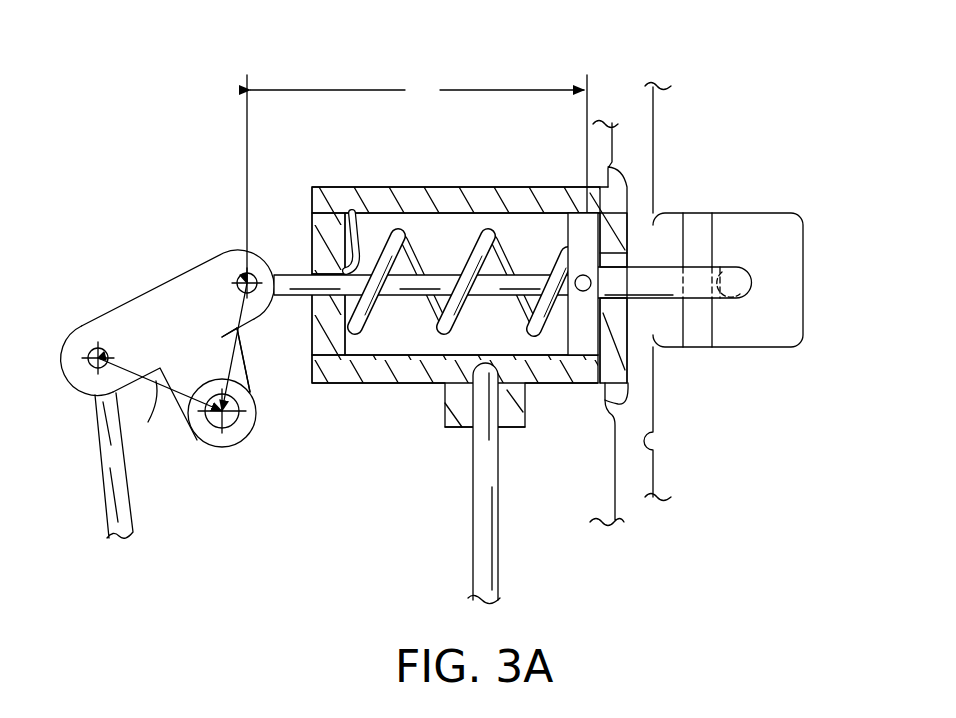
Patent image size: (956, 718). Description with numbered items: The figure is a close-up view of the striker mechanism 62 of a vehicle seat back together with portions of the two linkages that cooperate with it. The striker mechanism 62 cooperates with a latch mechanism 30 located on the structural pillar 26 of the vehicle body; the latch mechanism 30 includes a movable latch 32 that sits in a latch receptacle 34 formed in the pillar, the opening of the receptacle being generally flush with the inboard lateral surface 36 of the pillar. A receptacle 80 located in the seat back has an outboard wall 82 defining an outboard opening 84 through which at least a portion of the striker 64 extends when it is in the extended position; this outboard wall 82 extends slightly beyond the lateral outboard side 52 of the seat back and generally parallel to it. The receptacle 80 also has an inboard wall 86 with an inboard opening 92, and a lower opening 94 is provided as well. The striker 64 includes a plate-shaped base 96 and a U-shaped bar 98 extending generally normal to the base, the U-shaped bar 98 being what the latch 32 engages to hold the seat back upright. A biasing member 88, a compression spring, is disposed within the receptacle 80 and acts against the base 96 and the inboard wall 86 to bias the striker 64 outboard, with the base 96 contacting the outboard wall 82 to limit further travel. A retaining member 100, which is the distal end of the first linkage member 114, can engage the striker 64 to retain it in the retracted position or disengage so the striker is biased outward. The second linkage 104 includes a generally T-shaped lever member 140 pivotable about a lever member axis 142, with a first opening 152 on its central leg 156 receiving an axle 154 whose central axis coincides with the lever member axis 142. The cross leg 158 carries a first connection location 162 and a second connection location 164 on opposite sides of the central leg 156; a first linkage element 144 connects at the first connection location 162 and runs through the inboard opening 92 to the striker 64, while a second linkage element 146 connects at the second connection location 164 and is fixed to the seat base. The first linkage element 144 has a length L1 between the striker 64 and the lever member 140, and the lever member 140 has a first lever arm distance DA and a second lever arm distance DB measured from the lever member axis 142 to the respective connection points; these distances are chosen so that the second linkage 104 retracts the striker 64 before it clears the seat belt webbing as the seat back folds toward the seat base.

The structural pillar 26 is at (663, 115).
The latch mechanism 30 is at (733, 247).
The latch 32 is at (707, 240).
The latch receptacle 34 is at (768, 332).
The inboard lateral surface 36 is at (655, 453).
The lateral outboard side 52 is at (618, 508).
The striker mechanism 62 is at (633, 205).
The striker 64 is at (753, 282).
The receptacle 80 is at (441, 187).
The outboard wall 82 is at (620, 242).
The outboard opening 84 is at (623, 305).
The inboard wall 86 is at (327, 240).
The biasing member 88 is at (397, 233).
The inboard opening 92 is at (360, 266).
The lower opening 94 is at (470, 368).
The base 96 is at (583, 223).
The U-shaped bar 98 is at (663, 287).
The retaining member 100 is at (485, 390).
The second linkage 104 is at (105, 300).
The first linkage member 114 is at (477, 565).
The lever member 140 is at (131, 298).
The lever member axis 142 is at (203, 440).
The first linkage element 144 is at (443, 280).
The second linkage element 146 is at (120, 510).
The first opening 152 is at (235, 425).
The axle 154 is at (238, 415).
The central leg 156 is at (243, 387).
The cross leg 158 is at (162, 293).
The first connection location 162 is at (247, 267).
The second connection location 164 is at (97, 370).
The length L1 is at (417, 179).
The first lever arm distance DA is at (232, 330).
The second lever arm distance DB is at (142, 418).